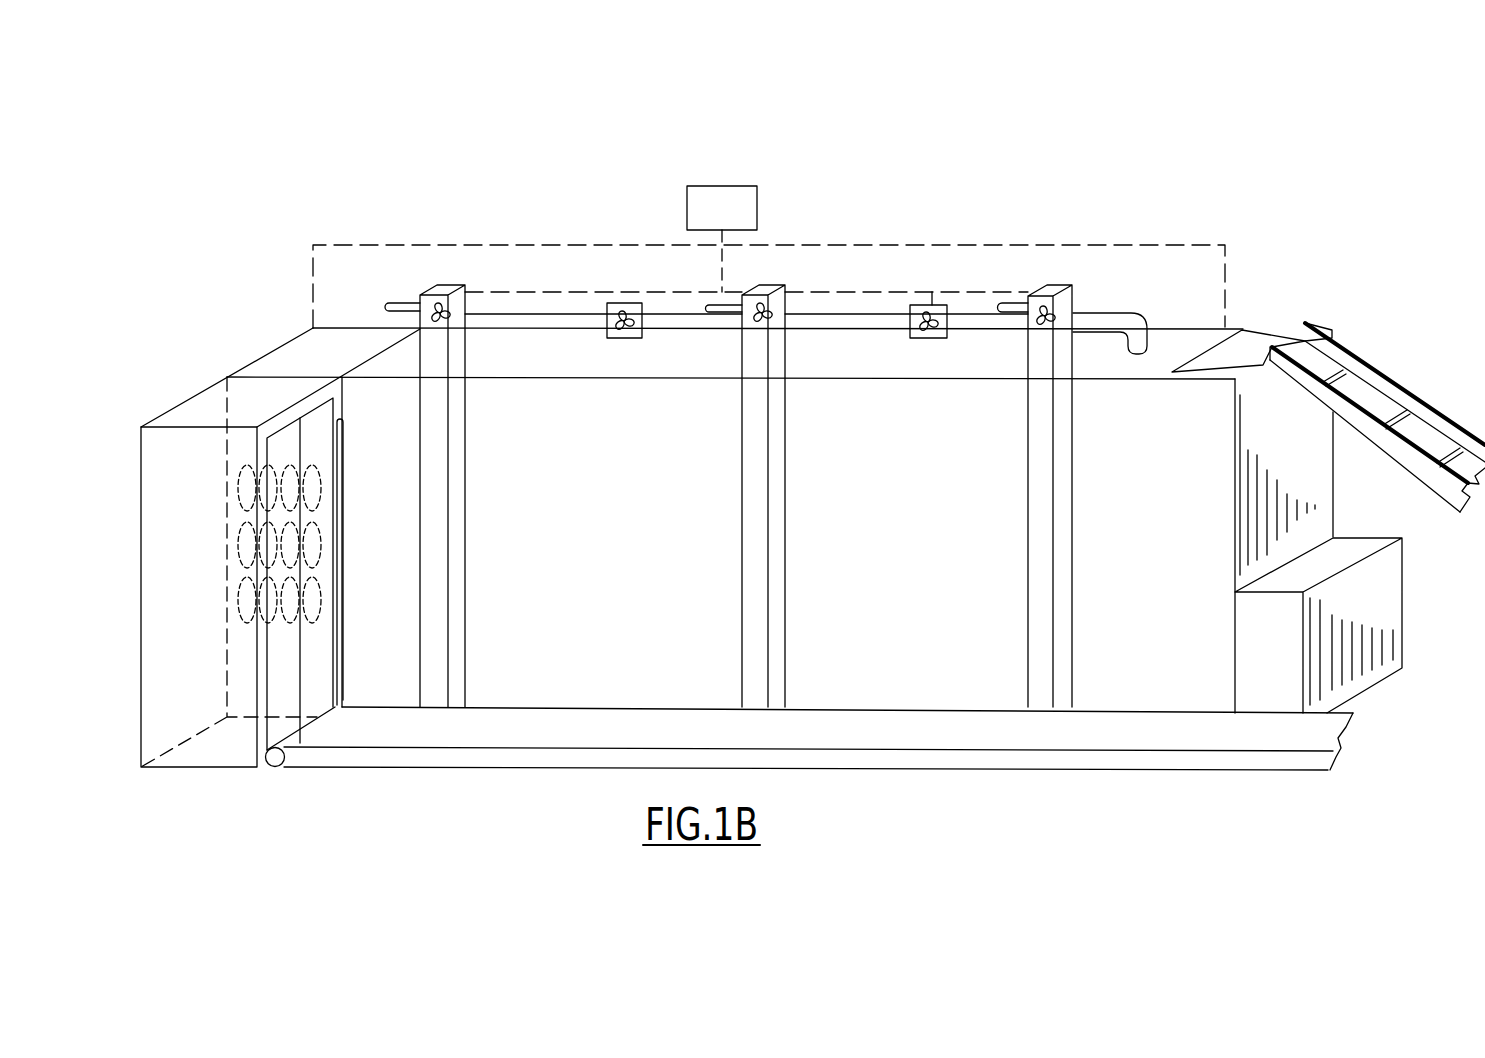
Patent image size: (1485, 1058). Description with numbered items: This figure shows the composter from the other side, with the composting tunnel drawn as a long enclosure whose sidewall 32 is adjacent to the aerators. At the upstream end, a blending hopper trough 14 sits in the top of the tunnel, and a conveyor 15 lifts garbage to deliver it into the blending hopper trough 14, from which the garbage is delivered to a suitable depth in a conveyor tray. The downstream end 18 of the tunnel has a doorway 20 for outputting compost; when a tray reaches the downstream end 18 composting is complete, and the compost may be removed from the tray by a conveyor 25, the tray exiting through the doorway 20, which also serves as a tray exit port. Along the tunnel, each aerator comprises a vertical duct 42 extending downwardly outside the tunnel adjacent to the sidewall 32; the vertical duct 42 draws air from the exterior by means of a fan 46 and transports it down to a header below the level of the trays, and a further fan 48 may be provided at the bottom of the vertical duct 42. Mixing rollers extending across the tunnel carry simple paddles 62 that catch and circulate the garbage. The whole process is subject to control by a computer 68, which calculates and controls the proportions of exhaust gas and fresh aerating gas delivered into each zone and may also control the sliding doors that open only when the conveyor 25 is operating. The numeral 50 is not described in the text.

The blending hopper trough 14 is at (1265, 332).
The conveyor 15 is at (1387, 390).
The downstream end 18 is at (332, 307).
The doorway 20 is at (368, 403).
The conveyor 25 is at (1080, 735).
The sidewall 32 is at (567, 405).
The vertical duct 42 is at (465, 302).
The fan 46 is at (440, 300).
The further fan 48 is at (615, 300).
The sensor lead 50 is at (637, 302).
The paddles 62 is at (292, 457).
The computer 68 is at (721, 188).